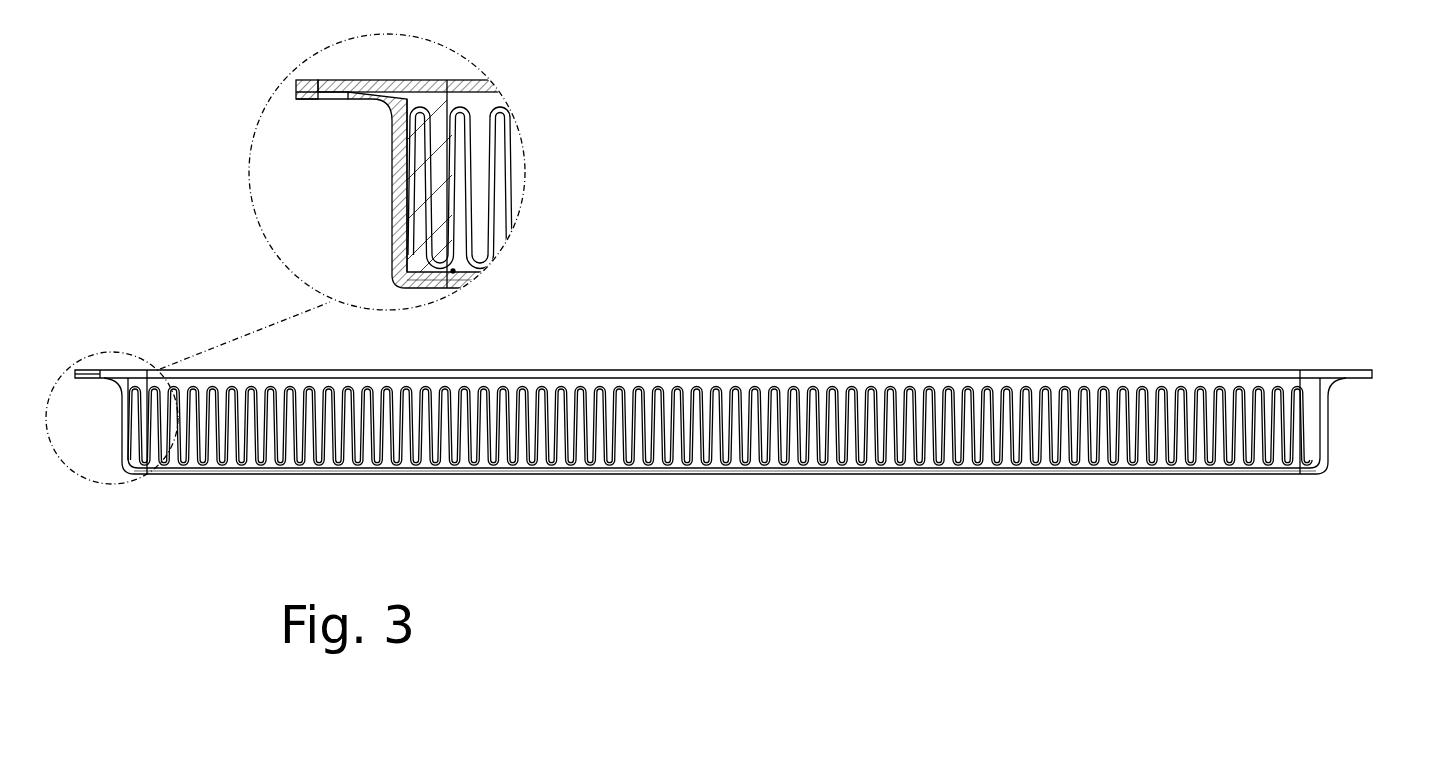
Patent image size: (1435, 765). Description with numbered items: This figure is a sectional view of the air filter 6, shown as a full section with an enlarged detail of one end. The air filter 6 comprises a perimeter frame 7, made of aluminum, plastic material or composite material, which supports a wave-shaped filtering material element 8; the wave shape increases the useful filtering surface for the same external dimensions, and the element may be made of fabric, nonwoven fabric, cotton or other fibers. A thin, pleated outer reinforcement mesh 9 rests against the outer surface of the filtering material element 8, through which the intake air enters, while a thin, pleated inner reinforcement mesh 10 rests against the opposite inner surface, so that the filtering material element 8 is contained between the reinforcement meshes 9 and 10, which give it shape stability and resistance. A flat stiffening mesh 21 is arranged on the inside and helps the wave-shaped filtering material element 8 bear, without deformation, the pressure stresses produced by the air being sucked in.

The air filter 6 is at (878, 630).
The perimeter frame 7 is at (350, 187).
The wave-shaped filtering material element 8 is at (720, 244).
The outer reinforcement mesh 9 is at (497, 102).
The inner reinforcement mesh 10 is at (493, 247).
The flat stiffening mesh 21 is at (453, 273).